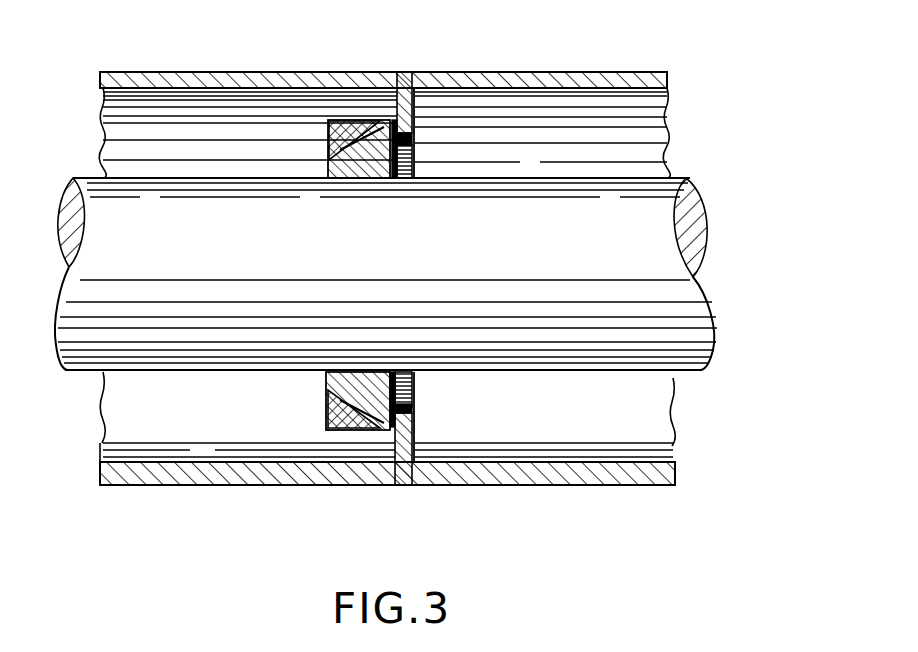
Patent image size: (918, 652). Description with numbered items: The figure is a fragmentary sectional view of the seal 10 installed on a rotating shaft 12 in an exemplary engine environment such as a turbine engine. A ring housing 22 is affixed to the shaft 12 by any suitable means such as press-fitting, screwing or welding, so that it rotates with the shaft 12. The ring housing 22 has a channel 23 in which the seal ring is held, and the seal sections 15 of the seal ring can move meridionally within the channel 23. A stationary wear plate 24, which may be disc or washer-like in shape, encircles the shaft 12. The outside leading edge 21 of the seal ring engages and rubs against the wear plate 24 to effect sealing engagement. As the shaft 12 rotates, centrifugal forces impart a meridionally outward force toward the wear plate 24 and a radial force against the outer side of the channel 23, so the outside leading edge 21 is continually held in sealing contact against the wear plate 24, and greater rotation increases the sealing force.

The seal 10 is at (305, 150).
The shaft 12 is at (684, 331).
The seal sections 15 is at (393, 98).
The outside leading edge 21 is at (437, 118).
The ring housing 22 is at (330, 119).
The channel 23 is at (348, 120).
The wear plate 24 is at (410, 428).